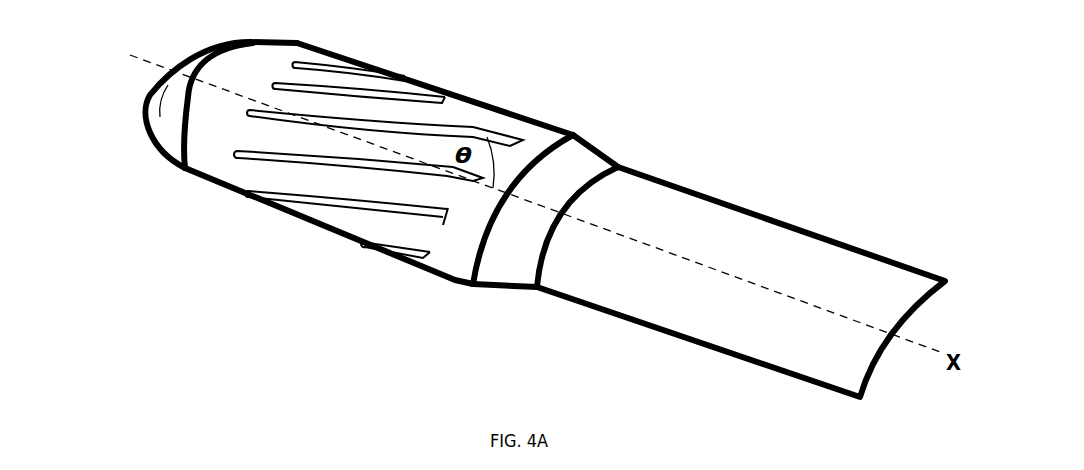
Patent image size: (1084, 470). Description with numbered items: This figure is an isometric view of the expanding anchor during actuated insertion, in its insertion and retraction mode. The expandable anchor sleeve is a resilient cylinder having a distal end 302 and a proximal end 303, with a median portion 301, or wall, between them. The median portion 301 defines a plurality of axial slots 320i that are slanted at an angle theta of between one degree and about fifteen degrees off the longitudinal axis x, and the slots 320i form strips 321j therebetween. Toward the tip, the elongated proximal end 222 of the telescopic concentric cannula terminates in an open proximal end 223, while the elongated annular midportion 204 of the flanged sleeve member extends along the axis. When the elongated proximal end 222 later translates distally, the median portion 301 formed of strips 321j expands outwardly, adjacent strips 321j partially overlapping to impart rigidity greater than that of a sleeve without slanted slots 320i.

The open proximal end 223 is at (167, 62).
The elongated proximal end 222 is at (143, 128).
The proximal end 303 is at (177, 167).
The median portion 301 is at (493, 120).
The distal end 302 is at (557, 175).
The elongated annular midportion 204 is at (707, 219).
The slots 320i is at (440, 92).
The strips 321j is at (317, 180).